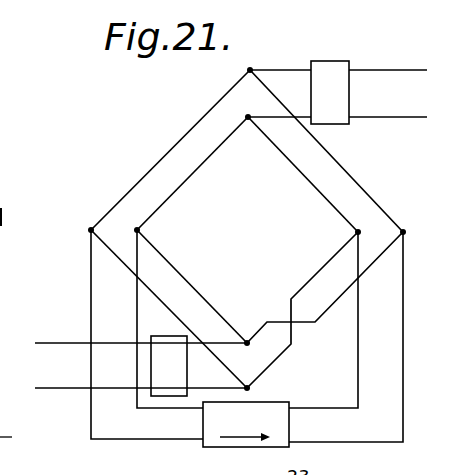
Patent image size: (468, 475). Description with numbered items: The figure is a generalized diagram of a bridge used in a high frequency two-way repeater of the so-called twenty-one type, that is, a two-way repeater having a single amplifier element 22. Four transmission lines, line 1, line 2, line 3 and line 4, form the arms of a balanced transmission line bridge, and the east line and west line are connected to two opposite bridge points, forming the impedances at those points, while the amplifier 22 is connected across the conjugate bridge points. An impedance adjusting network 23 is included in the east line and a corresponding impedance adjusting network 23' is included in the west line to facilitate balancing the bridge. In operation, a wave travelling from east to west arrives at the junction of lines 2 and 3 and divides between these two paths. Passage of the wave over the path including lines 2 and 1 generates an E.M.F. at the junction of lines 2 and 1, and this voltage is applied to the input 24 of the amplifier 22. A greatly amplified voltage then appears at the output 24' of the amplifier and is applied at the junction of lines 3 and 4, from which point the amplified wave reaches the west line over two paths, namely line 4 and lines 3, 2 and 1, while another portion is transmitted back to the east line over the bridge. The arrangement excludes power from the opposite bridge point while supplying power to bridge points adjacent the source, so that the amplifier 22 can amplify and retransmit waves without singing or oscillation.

The line 1 is at (169, 309).
The line 2 is at (170, 150).
The line 3 is at (325, 151).
The line 4 is at (325, 310).
The amplifier 22 is at (274, 401).
The impedance adjusting network 23 is at (337, 76).
The impedance adjusting network 23' is at (134, 386).
The input 24 is at (147, 352).
The output 24' is at (346, 349).